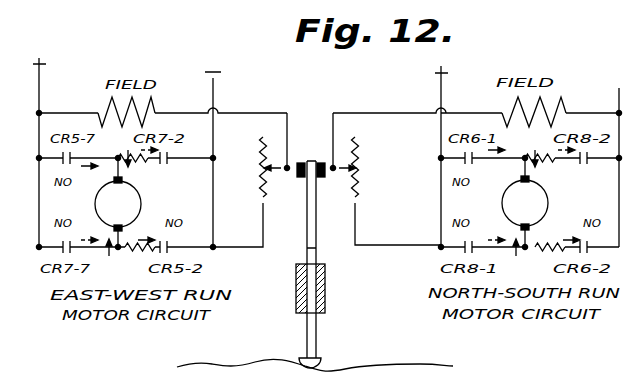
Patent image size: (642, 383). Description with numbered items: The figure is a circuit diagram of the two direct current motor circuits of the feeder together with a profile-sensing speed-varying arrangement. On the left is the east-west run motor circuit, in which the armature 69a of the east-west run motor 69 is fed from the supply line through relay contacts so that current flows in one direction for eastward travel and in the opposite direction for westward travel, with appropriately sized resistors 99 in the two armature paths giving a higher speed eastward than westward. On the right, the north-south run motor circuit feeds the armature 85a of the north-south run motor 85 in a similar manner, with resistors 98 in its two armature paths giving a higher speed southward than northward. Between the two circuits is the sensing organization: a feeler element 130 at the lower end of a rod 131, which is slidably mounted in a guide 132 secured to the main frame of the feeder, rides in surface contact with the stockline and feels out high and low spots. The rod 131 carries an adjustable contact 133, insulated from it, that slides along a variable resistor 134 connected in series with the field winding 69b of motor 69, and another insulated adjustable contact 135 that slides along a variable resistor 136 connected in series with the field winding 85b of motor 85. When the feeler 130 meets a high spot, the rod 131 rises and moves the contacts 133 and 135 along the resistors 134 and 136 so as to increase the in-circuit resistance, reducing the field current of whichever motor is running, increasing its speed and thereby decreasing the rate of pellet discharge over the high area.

The east-west run motor 69 is at (111, 168).
The armature 69a is at (95, 205).
The field winding 69b is at (98, 112).
The resistors 99 is at (148, 162).
The north-south run motor 85 is at (508, 167).
The armature 85a is at (502, 204).
The field winding 85b is at (502, 112).
The resistors 98 is at (555, 162).
The feeler element 130 is at (322, 361).
The rod 131 is at (306, 252).
The guide 132 is at (327, 298).
The adjustable contact 133 is at (286, 170).
The variable resistor 134 is at (262, 138).
The adjustable contact 135 is at (357, 173).
The variable resistor 136 is at (397, 190).